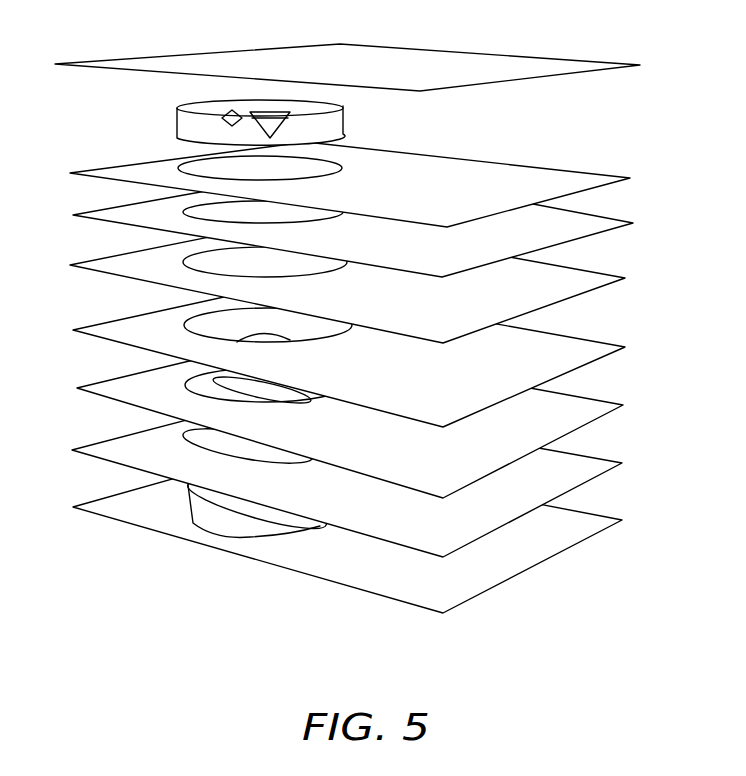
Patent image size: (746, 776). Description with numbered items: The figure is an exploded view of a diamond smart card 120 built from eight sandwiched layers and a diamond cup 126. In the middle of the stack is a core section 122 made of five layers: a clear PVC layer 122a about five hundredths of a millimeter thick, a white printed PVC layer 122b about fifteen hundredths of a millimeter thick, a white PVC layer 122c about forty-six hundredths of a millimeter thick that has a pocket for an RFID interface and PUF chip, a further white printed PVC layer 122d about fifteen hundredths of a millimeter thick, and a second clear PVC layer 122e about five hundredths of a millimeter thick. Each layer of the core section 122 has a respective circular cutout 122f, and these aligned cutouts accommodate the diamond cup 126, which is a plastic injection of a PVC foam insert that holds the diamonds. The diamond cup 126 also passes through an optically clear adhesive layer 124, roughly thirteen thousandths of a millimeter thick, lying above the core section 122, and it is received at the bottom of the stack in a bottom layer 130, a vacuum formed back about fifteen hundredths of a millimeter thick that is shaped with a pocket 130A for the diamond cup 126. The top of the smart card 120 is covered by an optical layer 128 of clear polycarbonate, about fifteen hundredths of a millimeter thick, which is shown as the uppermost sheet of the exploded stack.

The diamond smart card 120 is at (545, 143).
The core section 122 is at (354, 375).
The clear PVC layer 122a is at (622, 224).
The white printed PVC layer 122b is at (622, 275).
The white PVC layer 122c is at (604, 347).
The white printed PVC layer 122d is at (612, 406).
The clear PVC layer 122e is at (375, 491).
The circular cutout 122f is at (205, 446).
The optically clear adhesive layer 124 is at (602, 176).
The diamond cup 126 is at (343, 126).
The optical layer 128 is at (588, 63).
The bottom layer 130 is at (380, 532).
The pocket 130A is at (218, 518).